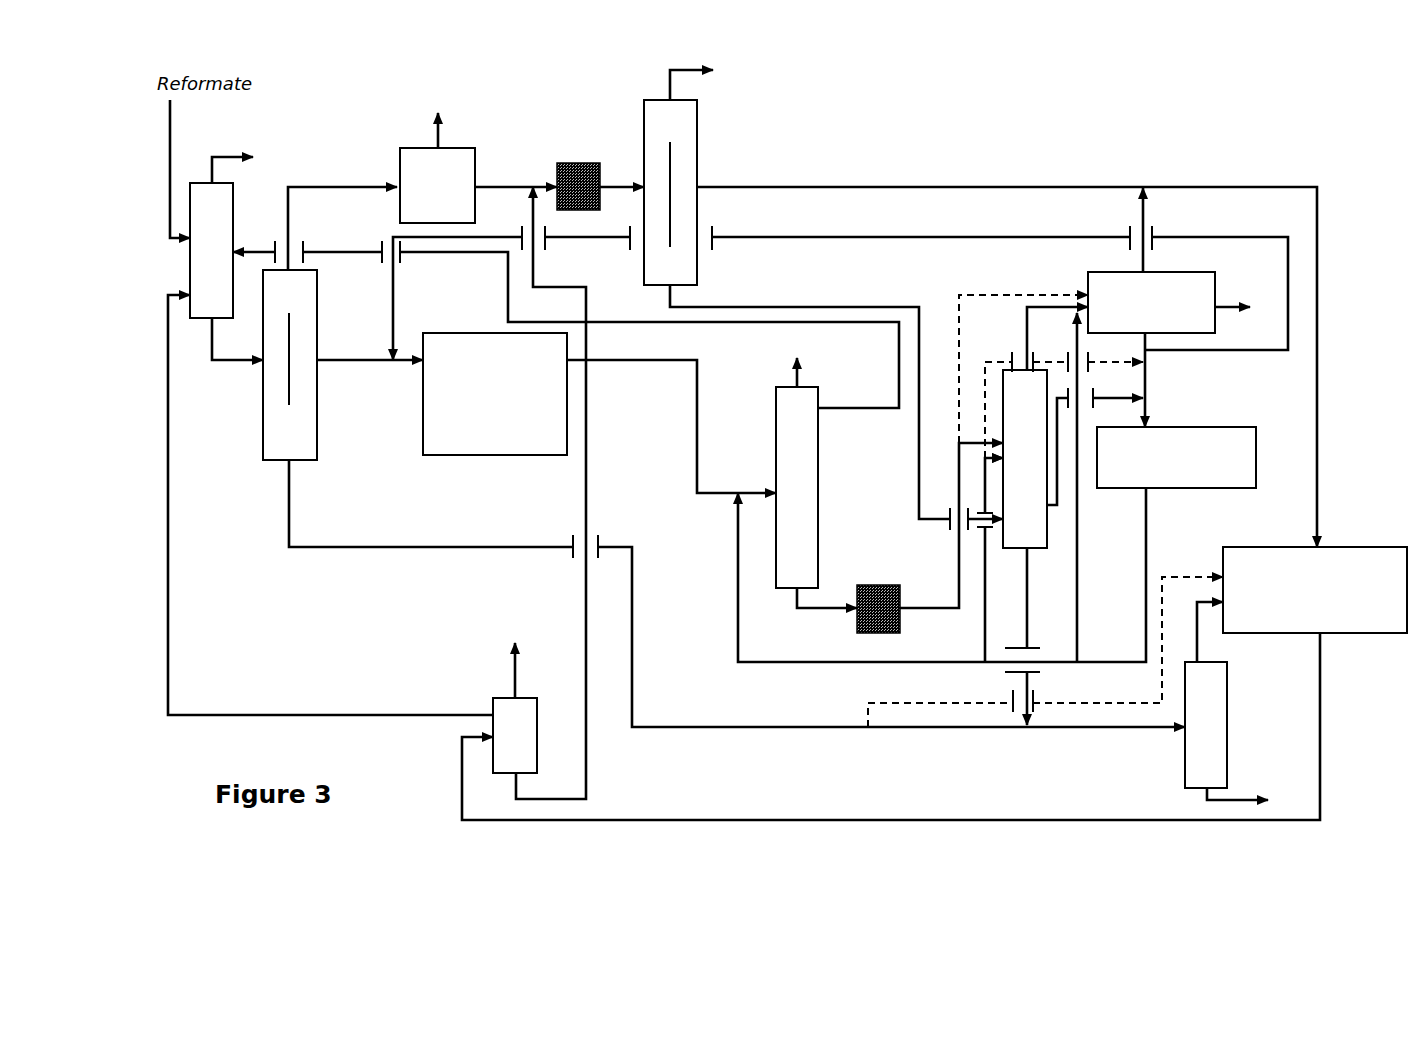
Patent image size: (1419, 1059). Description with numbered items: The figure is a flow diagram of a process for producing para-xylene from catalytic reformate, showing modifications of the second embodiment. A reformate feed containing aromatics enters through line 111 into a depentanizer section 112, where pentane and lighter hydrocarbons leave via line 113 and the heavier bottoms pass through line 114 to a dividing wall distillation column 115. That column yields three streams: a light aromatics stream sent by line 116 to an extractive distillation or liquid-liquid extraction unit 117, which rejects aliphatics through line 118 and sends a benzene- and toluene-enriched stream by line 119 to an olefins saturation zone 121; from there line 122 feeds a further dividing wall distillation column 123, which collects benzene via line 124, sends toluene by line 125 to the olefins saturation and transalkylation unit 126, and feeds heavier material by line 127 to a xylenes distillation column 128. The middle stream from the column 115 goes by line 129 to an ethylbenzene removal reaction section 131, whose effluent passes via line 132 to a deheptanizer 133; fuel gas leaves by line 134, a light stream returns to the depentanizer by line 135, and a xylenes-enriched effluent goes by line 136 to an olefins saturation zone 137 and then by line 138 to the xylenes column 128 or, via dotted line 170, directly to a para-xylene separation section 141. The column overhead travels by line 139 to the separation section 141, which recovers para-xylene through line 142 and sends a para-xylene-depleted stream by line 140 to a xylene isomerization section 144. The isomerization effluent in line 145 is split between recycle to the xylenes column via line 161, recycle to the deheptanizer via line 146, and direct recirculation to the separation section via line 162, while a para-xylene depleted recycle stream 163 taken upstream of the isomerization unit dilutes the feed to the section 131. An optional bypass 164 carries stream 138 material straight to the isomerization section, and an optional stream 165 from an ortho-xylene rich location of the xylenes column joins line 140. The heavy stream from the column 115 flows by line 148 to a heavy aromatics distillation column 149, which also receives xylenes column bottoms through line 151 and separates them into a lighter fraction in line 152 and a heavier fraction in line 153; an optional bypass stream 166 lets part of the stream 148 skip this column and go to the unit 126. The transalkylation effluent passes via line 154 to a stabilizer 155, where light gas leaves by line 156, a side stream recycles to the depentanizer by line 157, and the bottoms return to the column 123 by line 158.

The line 111 is at (188, 169).
The depentanizer section 112 is at (190, 248).
The line 113 is at (232, 158).
The line 114 is at (237, 353).
The dividing wall distillation column 115 is at (307, 317).
The line 116 is at (342, 218).
The extractive distillation or liquid-liquid extraction unit 117 is at (475, 148).
The line 118 is at (794, 184).
The line 119 is at (516, 175).
The olefins saturation zone 121 is at (558, 162).
The line 122 is at (622, 176).
The dividing wall distillation column 123 is at (692, 140).
The line 124 is at (709, 81).
The line 125 is at (1007, 356).
The transalkylation unit 126 is at (1332, 543).
The line 127 is at (836, 407).
The xylenes distillation column 128 is at (1040, 532).
The line 129 is at (370, 372).
The ethylbenzene removal reaction section 131 is at (473, 455).
The line 132 is at (671, 426).
The deheptanizer 133 is at (813, 490).
The line 134 is at (775, 372).
The line 135 is at (566, 324).
The line 136 is at (827, 612).
The olefins saturation zone 137 is at (863, 588).
The line 138 is at (951, 539).
The line 139 is at (1057, 338).
The line 140 is at (1162, 380).
The para-xylene separation section 141 is at (1192, 280).
The line 142 is at (1233, 295).
The xylene isomerization section 144 is at (1250, 458).
The line 145 is at (1130, 575).
The line 146 is at (887, 577).
The line 148 is at (717, 593).
The heavy aromatics distillation column 149 is at (1190, 755).
The line 151 is at (1032, 636).
The line 152 is at (1214, 632).
The line 153 is at (1237, 788).
The line 154 is at (891, 726).
The stabilizer 155 is at (523, 708).
The line 156 is at (502, 661).
The line 157 is at (330, 505).
The line 158 is at (567, 493).
The line 161 is at (975, 560).
The line 162 is at (1095, 487).
The recycle stream 163 is at (840, 287).
The optional bypass 164 is at (1062, 399).
The stream 165 is at (1095, 446).
The optional bypass stream 166 is at (1045, 640).
The dotted line 170 is at (1023, 358).